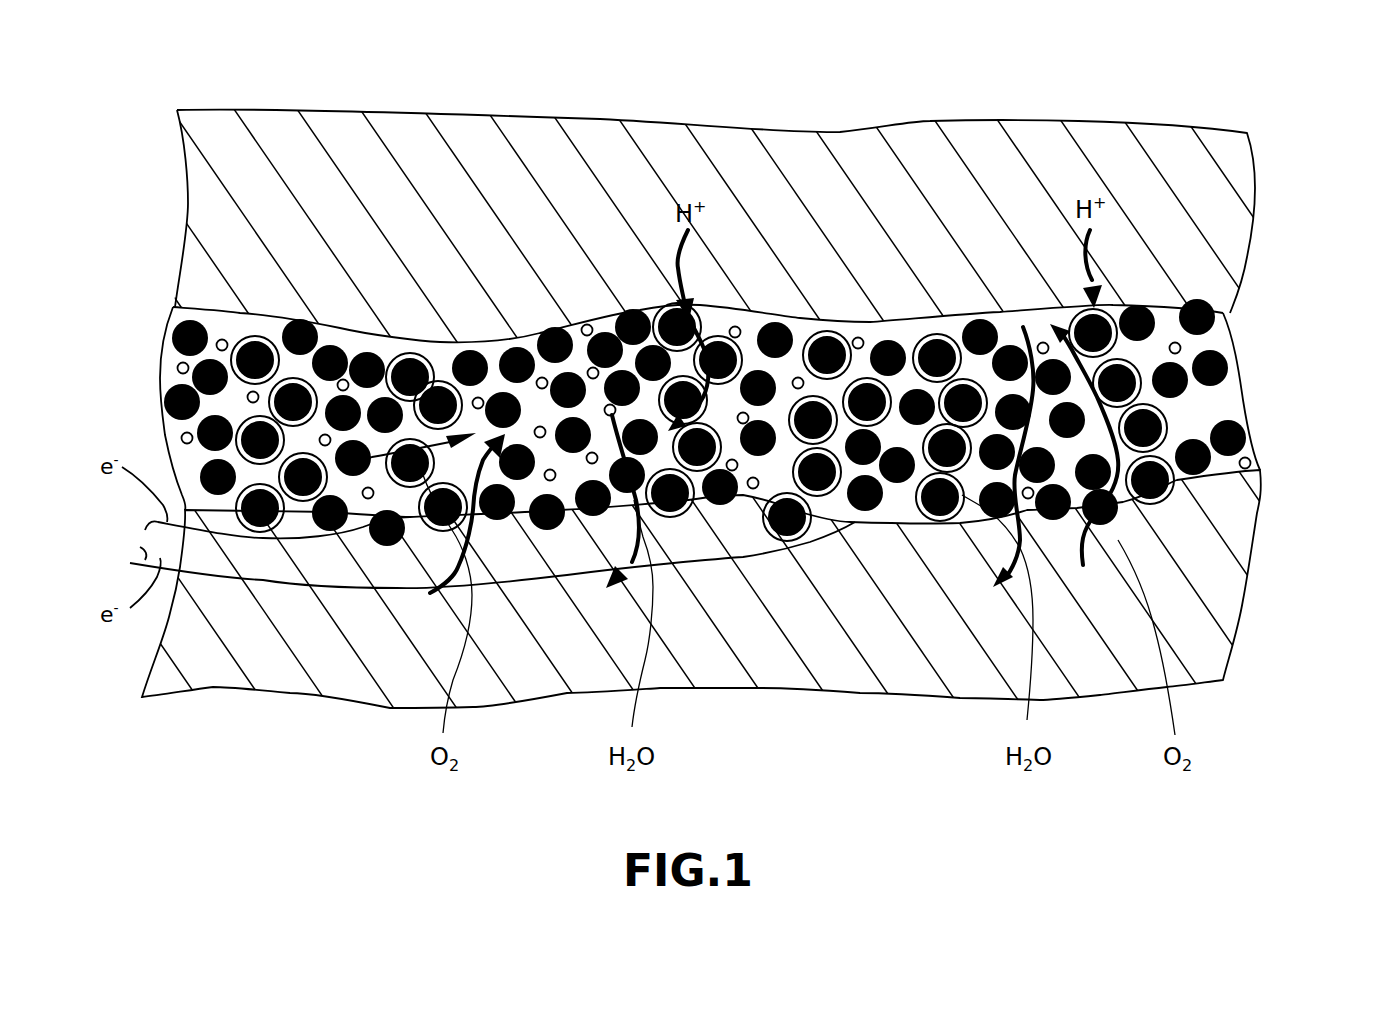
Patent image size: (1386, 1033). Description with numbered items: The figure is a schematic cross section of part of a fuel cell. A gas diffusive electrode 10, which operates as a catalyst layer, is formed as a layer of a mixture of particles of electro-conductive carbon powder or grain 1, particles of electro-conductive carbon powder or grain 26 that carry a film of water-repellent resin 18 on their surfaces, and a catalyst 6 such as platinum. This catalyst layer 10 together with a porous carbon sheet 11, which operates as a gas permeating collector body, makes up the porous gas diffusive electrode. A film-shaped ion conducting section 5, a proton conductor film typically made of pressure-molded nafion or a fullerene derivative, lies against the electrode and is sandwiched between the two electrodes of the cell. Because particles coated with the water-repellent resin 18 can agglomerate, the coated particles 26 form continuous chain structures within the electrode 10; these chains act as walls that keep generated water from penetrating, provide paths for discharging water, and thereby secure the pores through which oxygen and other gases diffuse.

The particles of electro-conductive carbon powder or grain 1 is at (488, 343).
The ion conducting section 5 is at (240, 137).
The catalyst 6 is at (743, 330).
The gas diffusive electrode 10 is at (1303, 285).
The porous carbon sheet 11 is at (248, 672).
The water-repellent resin 18 is at (1140, 362).
The particles of electro-conductive carbon powder or grain having a film of water-re 26 is at (940, 330).